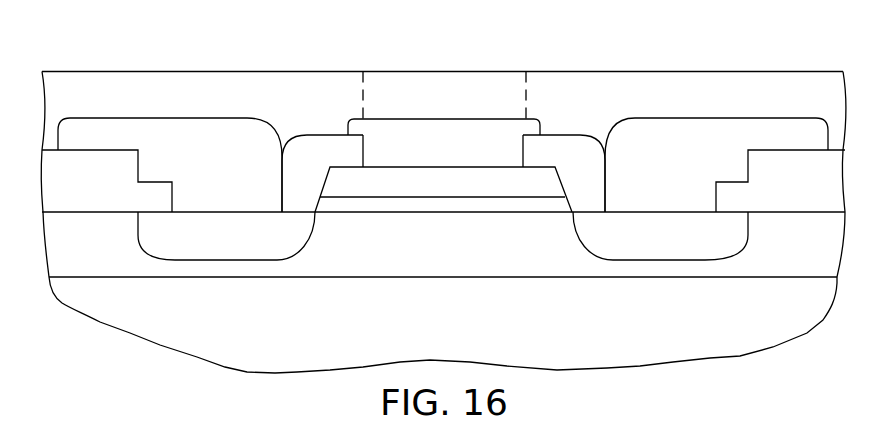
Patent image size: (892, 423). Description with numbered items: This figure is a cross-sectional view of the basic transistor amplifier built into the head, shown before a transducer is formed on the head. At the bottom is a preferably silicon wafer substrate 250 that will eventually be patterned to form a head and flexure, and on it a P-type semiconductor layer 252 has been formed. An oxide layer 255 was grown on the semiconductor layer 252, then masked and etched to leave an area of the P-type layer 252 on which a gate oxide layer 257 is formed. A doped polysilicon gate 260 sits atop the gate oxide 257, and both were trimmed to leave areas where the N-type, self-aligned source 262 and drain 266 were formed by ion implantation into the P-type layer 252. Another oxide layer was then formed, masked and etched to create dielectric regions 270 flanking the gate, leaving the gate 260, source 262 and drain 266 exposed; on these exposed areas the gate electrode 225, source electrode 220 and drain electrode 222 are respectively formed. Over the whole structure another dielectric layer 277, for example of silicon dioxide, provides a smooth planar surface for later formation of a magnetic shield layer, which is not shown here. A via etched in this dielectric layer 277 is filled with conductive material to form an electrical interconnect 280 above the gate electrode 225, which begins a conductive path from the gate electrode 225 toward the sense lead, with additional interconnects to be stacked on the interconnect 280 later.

The source electrode 220 is at (199, 170).
The drain electrode 222 is at (649, 170).
The gate electrode 225 is at (424, 148).
The silicon wafer substrate 250 is at (426, 330).
The P-type semiconductor layer 252 is at (426, 254).
The oxide layer 255 is at (443, 181).
The gate oxide layer 257 is at (362, 204).
The doped polysilicon gate 260 is at (539, 188).
The source 262 is at (199, 243).
The drain 266 is at (649, 243).
The dielectric regions 270 is at (316, 133).
The dielectric layer 277 is at (136, 103).
The electrical interconnect 280 is at (446, 87).